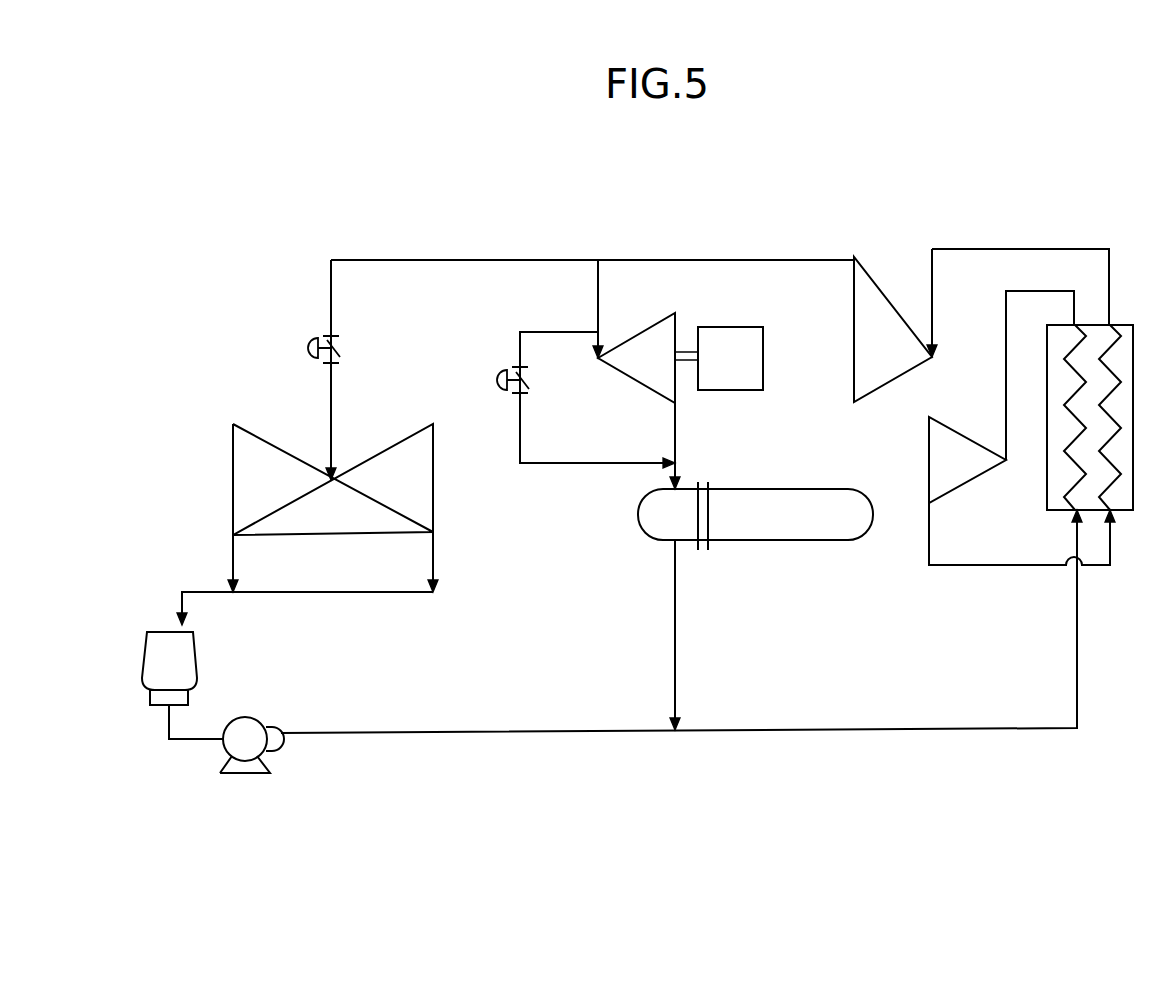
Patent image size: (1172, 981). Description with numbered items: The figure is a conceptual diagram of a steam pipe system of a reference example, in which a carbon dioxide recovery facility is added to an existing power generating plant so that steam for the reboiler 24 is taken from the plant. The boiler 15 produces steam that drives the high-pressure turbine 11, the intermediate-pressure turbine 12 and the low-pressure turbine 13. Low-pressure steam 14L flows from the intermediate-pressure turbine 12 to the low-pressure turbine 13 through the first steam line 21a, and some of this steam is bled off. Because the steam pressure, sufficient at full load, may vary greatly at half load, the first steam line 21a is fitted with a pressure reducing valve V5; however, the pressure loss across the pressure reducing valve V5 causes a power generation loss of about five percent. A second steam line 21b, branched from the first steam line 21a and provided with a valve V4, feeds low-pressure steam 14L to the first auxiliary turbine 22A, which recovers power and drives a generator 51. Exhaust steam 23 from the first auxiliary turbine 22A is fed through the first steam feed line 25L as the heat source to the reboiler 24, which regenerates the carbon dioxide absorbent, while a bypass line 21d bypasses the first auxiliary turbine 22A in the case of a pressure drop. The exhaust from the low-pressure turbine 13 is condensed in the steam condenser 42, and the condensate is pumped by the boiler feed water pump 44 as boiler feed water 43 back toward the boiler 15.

The high-pressure turbine 11 is at (929, 490).
The intermediate-pressure turbine 12 is at (890, 332).
The low-pressure turbine 13 is at (450, 506).
The low-pressure steam 14L is at (780, 243).
The boiler 15 is at (1128, 325).
The first steam line 21a is at (405, 262).
The second steam line 21b is at (598, 306).
The bypass line 21d is at (572, 465).
The first auxiliary turbine 22A is at (654, 315).
The exhaust steam 23 is at (693, 415).
The reboiler 24 is at (808, 488).
The first steam feed line 25L is at (675, 424).
The steam condenser 42 is at (197, 649).
The boiler feed water 43 is at (398, 747).
The boiler feed water pump 44 is at (254, 717).
The generator 51 is at (740, 327).
The valve V4 is at (492, 380).
The pressure reducing valve V5 is at (303, 348).